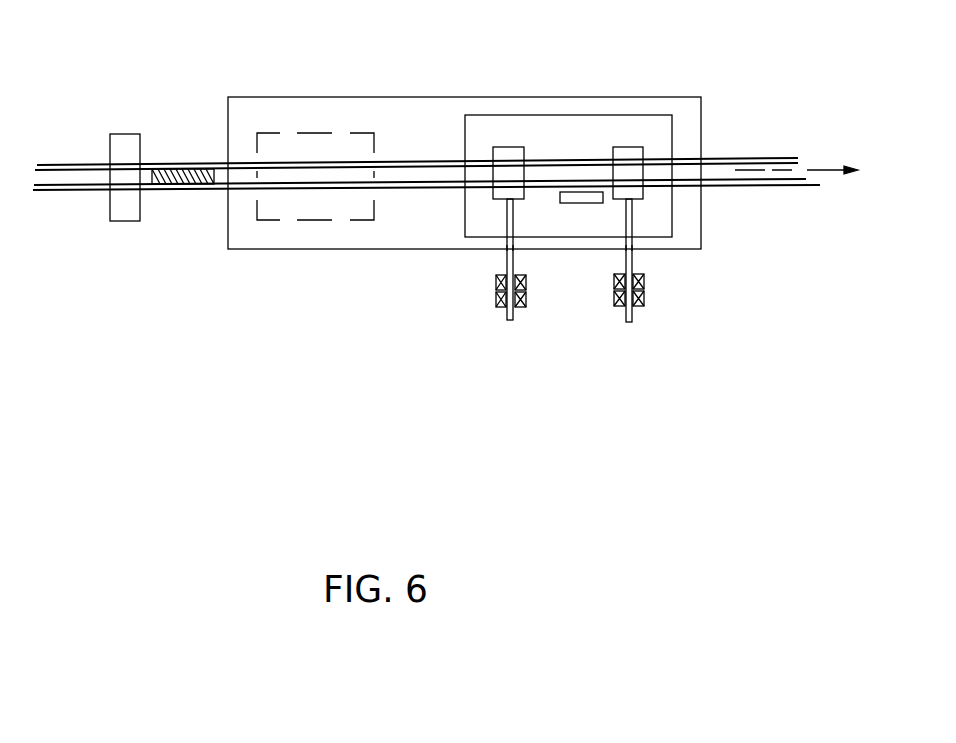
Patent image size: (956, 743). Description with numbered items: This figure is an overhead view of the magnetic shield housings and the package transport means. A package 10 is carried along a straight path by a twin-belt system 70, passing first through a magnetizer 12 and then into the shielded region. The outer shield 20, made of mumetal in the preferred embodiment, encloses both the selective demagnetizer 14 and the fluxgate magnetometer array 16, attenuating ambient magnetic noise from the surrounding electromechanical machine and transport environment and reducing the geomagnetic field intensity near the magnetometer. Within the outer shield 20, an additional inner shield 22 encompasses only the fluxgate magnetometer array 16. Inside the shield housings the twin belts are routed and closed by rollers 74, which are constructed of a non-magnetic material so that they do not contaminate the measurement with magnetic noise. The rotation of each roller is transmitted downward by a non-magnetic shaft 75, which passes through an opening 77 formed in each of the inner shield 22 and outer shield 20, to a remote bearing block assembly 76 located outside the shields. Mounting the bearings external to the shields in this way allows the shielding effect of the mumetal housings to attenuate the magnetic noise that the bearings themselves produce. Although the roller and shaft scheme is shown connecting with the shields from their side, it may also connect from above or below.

The twin-belt system 70 is at (43, 184).
The magnitizer 12 is at (112, 221).
The package 10 is at (215, 185).
The outer shield 20 is at (251, 241).
The demagnetizer 14 is at (326, 152).
The inner shield 22 is at (665, 148).
The rollers 74 is at (525, 147).
The fluxgate magnetometer array 16 is at (603, 193).
The non-magnetic shaft 75 is at (514, 262).
The opening 77 is at (507, 247).
The bearing block assembly 76 is at (670, 300).